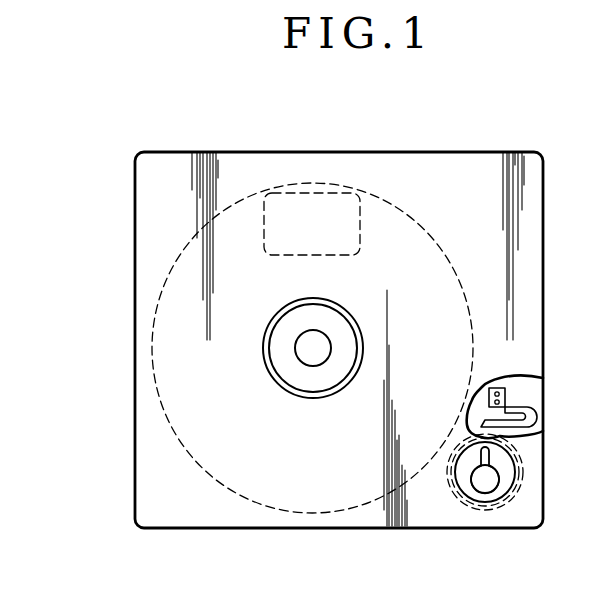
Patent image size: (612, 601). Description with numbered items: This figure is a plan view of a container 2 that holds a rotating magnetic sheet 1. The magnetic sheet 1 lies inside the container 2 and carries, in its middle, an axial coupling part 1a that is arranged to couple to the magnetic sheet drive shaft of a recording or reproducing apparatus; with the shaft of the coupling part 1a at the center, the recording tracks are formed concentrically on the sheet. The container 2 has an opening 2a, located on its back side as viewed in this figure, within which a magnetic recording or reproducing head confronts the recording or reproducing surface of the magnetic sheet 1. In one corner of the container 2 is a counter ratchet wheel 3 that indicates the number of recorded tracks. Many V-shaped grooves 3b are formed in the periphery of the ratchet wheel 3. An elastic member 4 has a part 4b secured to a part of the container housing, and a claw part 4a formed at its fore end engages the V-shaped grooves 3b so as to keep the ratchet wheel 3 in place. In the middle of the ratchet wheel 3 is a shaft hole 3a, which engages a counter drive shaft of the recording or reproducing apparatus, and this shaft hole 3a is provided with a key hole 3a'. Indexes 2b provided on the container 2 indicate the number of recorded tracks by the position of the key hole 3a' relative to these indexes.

The rotating magnetic sheet 1 is at (394, 209).
The axial coupling part 1a is at (313, 366).
The container 2 is at (545, 195).
The opening 2a is at (325, 191).
The indexes 2b is at (453, 483).
The counter ratchet wheel 3 is at (510, 468).
The shaft hole 3a is at (485, 515).
The key hole 3a' is at (513, 524).
The V-shaped grooves 3b is at (520, 433).
The elastic member 4 is at (536, 365).
The claw part 4a is at (535, 413).
The secured part of elastic member 4b is at (500, 386).